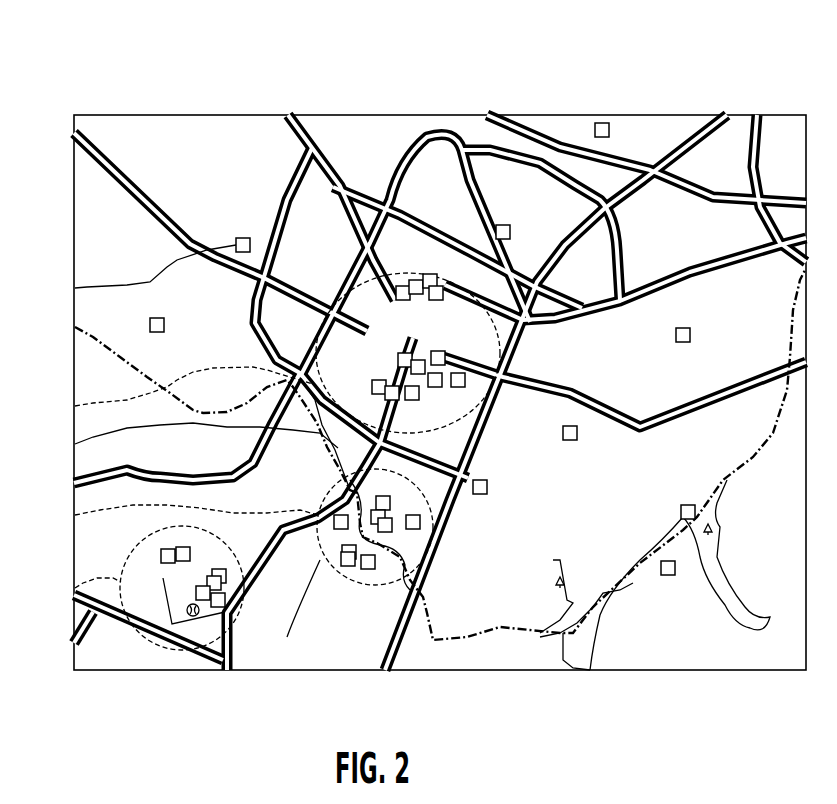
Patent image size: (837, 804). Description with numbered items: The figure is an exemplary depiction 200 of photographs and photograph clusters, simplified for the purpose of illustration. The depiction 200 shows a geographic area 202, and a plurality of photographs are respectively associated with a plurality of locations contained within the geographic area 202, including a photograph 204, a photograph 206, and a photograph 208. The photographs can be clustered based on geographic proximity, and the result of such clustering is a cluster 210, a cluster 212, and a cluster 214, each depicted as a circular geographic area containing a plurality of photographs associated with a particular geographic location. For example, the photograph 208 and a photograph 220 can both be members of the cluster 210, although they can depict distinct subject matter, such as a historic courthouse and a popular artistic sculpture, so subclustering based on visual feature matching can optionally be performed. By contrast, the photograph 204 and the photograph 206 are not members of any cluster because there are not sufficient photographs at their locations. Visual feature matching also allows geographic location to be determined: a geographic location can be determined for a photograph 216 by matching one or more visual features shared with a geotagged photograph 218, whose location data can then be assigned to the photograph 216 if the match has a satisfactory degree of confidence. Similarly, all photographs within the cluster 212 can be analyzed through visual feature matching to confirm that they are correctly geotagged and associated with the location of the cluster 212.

The depiction 200 is at (110, 62).
The geographic area 202 is at (74, 213).
The photograph 204 is at (602, 123).
The photograph 206 is at (75, 288).
The photograph 208 is at (75, 444).
The cluster 210 is at (75, 406).
The cluster 212 is at (75, 588).
The cluster 214 is at (75, 515).
The photograph 216 is at (213, 607).
The photograph 218 is at (230, 627).
The photograph 220 is at (399, 286).